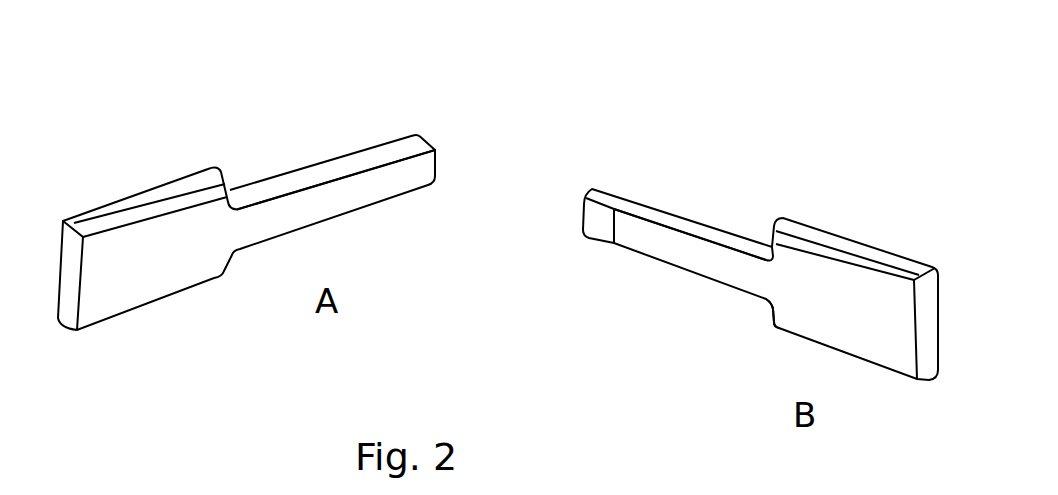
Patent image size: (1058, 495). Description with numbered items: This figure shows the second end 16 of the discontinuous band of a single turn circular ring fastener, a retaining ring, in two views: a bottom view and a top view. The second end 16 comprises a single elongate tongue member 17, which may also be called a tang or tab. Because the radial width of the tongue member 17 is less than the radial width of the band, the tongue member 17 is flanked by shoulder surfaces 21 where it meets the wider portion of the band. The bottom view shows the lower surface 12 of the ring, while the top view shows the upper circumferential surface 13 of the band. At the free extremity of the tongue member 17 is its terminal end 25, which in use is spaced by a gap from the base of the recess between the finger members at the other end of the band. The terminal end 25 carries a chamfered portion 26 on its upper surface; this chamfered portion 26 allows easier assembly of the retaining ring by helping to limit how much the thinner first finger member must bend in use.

The lower surface 12 is at (137, 271).
The upper circumferential surface 13 is at (900, 357).
The second end 16 is at (180, 185).
The tongue member 17 is at (388, 148).
The shoulder surfaces 21 is at (773, 312).
The terminal end 25 is at (745, 245).
The chamfered portion 26 is at (597, 236).